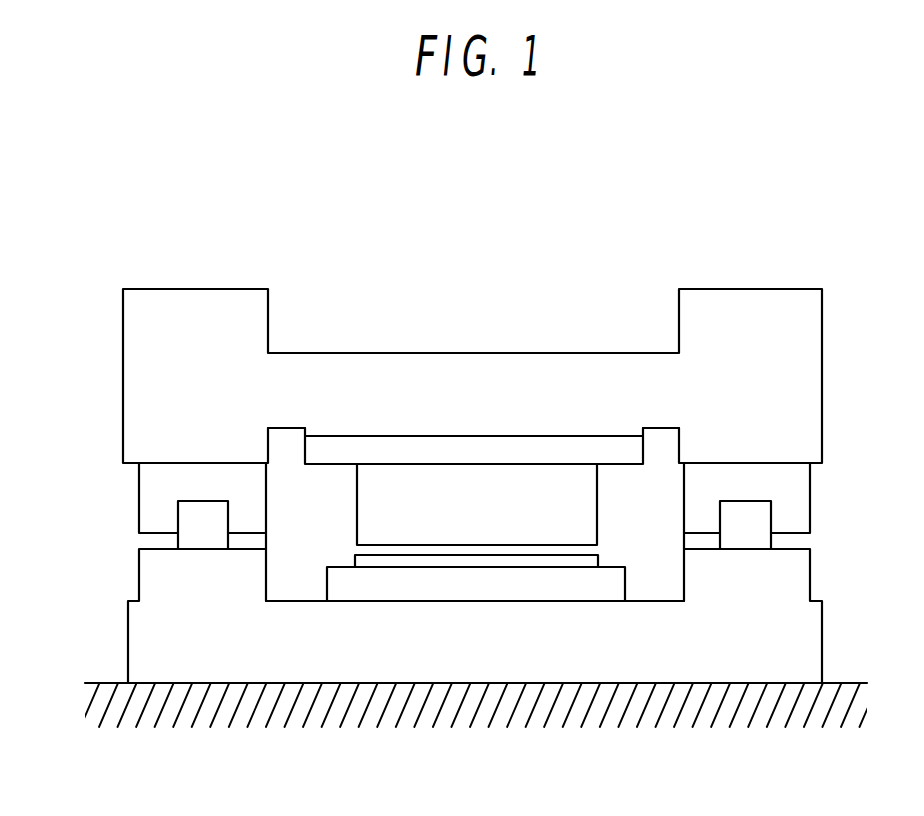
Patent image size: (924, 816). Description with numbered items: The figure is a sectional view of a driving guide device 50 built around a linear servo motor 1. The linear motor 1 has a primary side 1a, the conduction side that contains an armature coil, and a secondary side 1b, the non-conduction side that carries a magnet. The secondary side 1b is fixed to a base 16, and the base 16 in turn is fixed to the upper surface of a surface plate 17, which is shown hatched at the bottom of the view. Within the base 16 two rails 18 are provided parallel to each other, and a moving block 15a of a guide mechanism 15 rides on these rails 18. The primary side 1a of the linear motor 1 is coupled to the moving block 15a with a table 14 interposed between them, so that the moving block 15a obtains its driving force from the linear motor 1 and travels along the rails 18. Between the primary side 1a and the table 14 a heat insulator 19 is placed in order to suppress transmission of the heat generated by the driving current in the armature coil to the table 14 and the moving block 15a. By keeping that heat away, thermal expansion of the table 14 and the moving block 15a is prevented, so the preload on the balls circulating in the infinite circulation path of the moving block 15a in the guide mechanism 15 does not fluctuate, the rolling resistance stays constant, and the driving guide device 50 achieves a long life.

The driving guide device 50 is at (764, 246).
The table 14 is at (195, 289).
The heat insulator 19 is at (382, 428).
The primary side 1a is at (463, 495).
The linear servo motor 1 is at (616, 541).
The secondary side 1b is at (463, 582).
The moving block 15a is at (139, 488).
The rails 18 is at (202, 532).
The guide mechanism 15 is at (120, 540).
The base 16 is at (822, 645).
The surface plate 17 is at (657, 685).